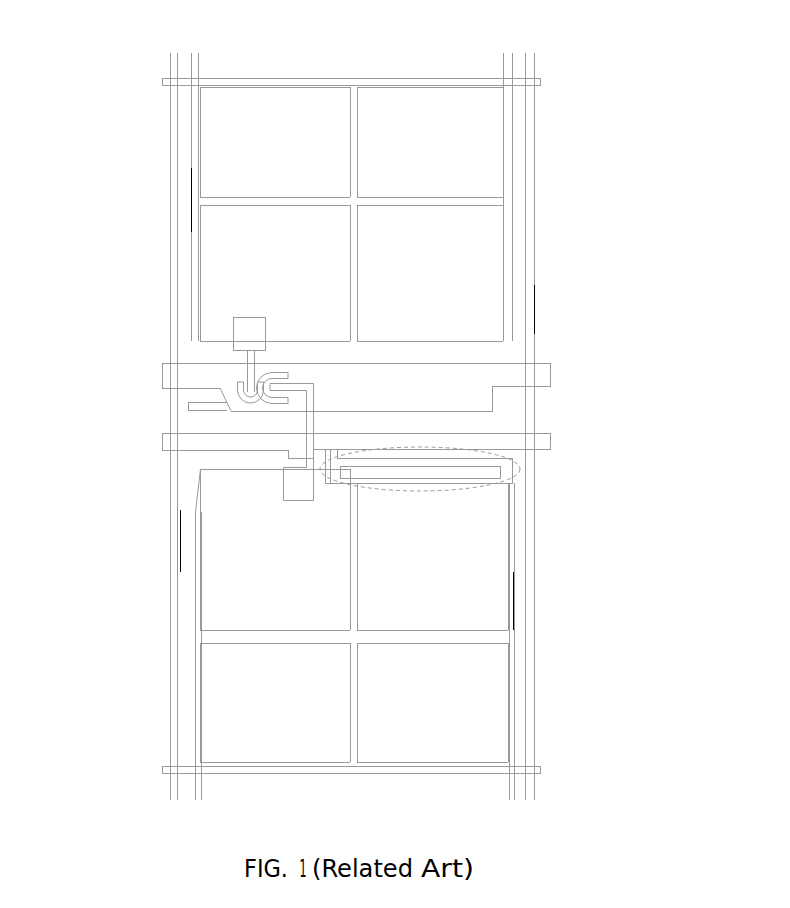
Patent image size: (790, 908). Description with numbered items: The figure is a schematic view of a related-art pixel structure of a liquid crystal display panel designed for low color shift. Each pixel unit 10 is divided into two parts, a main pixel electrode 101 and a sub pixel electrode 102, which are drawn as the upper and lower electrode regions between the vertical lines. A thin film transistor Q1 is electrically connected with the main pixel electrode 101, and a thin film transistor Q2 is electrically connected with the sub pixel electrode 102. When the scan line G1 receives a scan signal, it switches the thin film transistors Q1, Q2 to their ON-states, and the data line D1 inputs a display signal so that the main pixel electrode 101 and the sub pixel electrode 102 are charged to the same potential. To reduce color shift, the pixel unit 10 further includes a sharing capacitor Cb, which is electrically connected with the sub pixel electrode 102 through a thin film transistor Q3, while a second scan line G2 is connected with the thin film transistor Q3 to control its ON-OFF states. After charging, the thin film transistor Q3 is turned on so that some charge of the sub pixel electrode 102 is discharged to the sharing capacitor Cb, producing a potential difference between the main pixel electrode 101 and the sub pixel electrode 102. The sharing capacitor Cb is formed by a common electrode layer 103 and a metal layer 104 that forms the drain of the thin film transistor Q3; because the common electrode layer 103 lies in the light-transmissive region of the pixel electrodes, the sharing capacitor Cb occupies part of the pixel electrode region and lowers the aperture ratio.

The pixel unit 10 is at (453, 81).
The data line D1 is at (177, 131).
The main pixel electrode 101 is at (465, 170).
The sub pixel electrode 102 is at (478, 668).
The scan line G1 is at (475, 380).
The scan line G2 is at (493, 438).
The thin film transistor Q1 is at (243, 398).
The thin film transistor Q2 is at (255, 345).
The thin film transistor Q3 is at (297, 437).
The sharing capacitor Cb is at (520, 470).
The common electrode layer 103 is at (455, 463).
The metal layer 104 is at (450, 471).